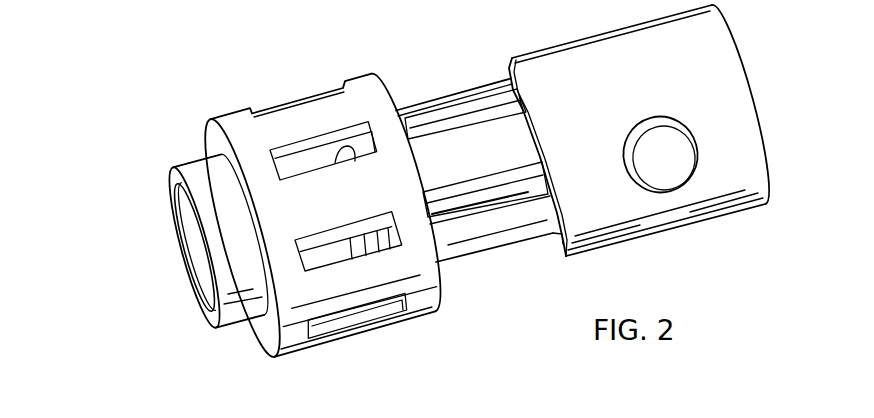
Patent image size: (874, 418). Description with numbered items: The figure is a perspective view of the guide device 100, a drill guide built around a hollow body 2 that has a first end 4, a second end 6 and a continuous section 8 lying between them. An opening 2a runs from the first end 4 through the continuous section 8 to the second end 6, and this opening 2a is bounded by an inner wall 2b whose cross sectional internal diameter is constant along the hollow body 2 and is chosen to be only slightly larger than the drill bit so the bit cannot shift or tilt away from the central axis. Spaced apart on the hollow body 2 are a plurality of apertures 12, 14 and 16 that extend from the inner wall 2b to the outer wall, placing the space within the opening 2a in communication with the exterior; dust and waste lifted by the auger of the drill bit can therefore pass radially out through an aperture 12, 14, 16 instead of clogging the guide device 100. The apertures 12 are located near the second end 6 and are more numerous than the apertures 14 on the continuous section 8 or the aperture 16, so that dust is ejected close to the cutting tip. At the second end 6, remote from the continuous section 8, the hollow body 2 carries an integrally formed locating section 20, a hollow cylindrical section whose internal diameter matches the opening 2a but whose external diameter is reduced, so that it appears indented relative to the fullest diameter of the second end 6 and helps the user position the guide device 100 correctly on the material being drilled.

The guide device 100 is at (784, 128).
The hollow body 2 is at (425, 103).
The opening 2a is at (192, 257).
The inner wall 2b is at (177, 213).
The first end 4 is at (766, 174).
The second end 6 is at (272, 357).
The continuous section 8 is at (485, 227).
The apertures 12 is at (345, 316).
The apertures 14 is at (451, 123).
The aperture 16 is at (662, 162).
The locating section 20 is at (208, 313).